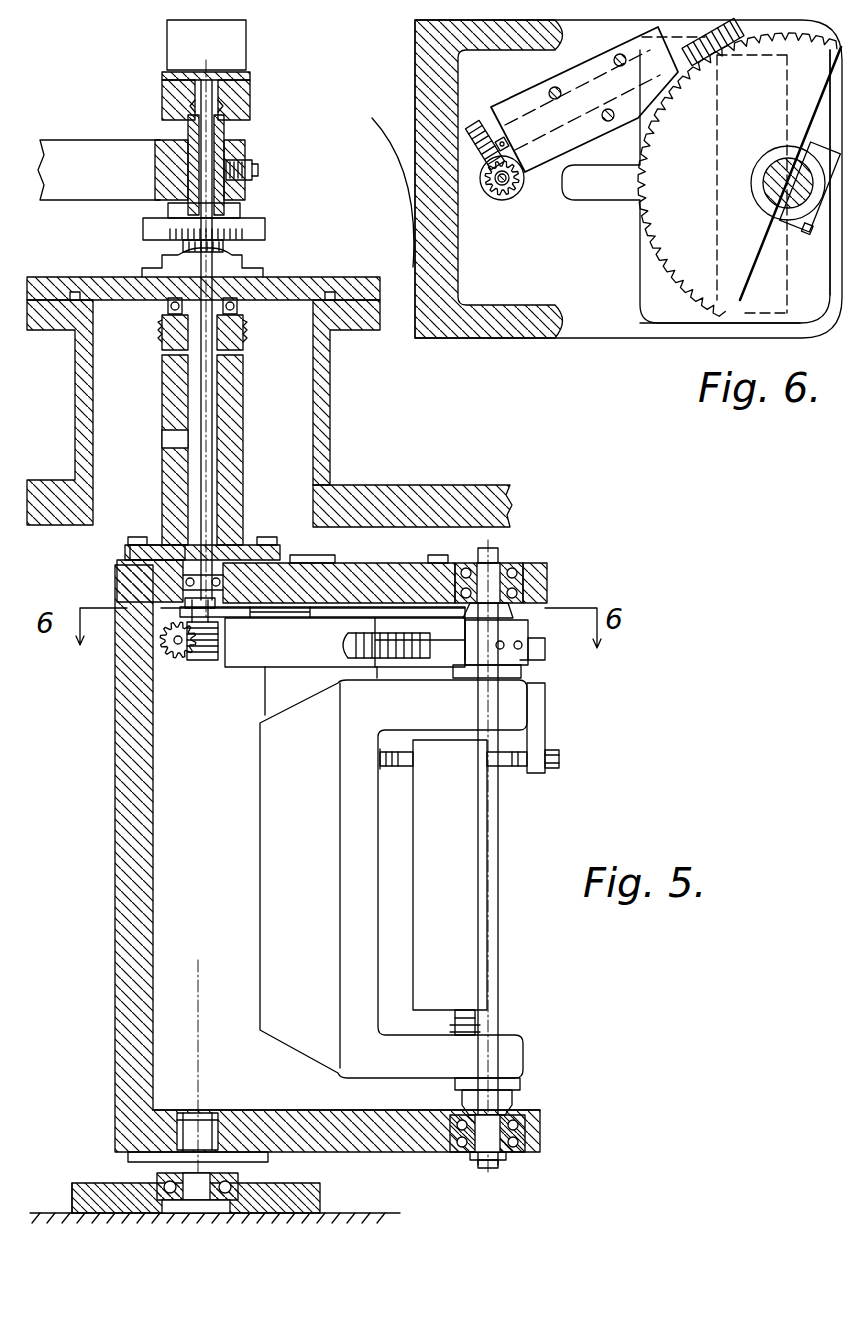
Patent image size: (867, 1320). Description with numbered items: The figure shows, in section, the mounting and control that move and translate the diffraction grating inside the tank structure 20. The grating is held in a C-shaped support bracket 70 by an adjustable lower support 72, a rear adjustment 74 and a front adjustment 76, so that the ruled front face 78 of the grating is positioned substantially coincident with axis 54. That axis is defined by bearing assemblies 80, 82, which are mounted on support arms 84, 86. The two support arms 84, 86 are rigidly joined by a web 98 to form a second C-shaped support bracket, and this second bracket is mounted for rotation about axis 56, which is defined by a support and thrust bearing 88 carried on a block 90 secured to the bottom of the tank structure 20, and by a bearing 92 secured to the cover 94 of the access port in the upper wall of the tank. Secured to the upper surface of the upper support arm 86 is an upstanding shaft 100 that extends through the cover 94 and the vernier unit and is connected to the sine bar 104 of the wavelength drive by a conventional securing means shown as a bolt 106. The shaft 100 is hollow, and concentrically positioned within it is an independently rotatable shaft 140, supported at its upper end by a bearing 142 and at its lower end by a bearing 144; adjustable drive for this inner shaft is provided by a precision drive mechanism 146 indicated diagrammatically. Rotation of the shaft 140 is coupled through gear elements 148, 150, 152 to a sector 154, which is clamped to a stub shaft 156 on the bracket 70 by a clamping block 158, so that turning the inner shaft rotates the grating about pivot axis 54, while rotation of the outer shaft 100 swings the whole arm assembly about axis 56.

In FIG. 5, the tank structure 20 is at (445, 487).
In FIG. 5, the axis 54 is at (490, 575).
In FIG. 6, the axis 54 is at (782, 190).
In FIG. 5, the axis 56 is at (200, 1045).
In FIG. 6, the axis 56 is at (490, 195).
In FIG. 5, the C-shaped support bracket 70 is at (515, 1060).
In FIG. 6, the C-shaped support bracket 70 is at (640, 300).
In FIG. 5, the adjustable lower support 72 is at (470, 1023).
In FIG. 5, the rear adjustment 74 is at (405, 768).
In FIG. 5, the front adjustment 76 is at (505, 770).
In FIG. 5, the ruled front face 78 is at (487, 895).
In FIG. 6, the ruled front face 78 is at (810, 340).
In FIG. 5, the bearing assembly 80 is at (505, 1150).
In FIG. 5, the bearing assembly 82 is at (500, 580).
In FIG. 5, the support arm 84 is at (360, 1140).
In FIG. 6, the support arm 84 is at (668, 340).
In FIG. 5, the support arm 86 is at (403, 555).
In FIG. 5, the support and thrust bearing 88 is at (323, 437).
In FIG. 5, the block 90 is at (72, 1183).
In FIG. 6, the block 90 is at (380, 185).
In FIG. 5, the bearing 92 is at (170, 302).
In FIG. 5, the cover 94 is at (295, 277).
In FIG. 5, the web 98 is at (143, 226).
In FIG. 6, the web 98 is at (445, 318).
In FIG. 5, the upstanding shaft 100 is at (165, 410).
In FIG. 5, the sine bar 104 is at (90, 125).
In FIG. 5, the bolt 106 is at (258, 172).
In FIG. 5, the shaft 140 is at (207, 145).
In FIG. 5, the bearing 142 is at (218, 100).
In FIG. 5, the bearing 144 is at (190, 583).
In FIG. 5, the precision drive mechanism 146 is at (167, 53).
In FIG. 5, the gear element 148 is at (218, 645).
In FIG. 6, the gear element 148 is at (495, 190).
In FIG. 5, the gear element 150 is at (178, 660).
In FIG. 6, the gear element 150 is at (482, 120).
In FIG. 6, the gear element 152 is at (712, 62).
In FIG. 5, the sector 154 is at (395, 660).
In FIG. 6, the sector 154 is at (672, 197).
In FIG. 5, the stub shaft 156 is at (525, 605).
In FIG. 6, the stub shaft 156 is at (785, 160).
In FIG. 5, the clamping block 158 is at (520, 663).
In FIG. 6, the clamping block 158 is at (803, 235).